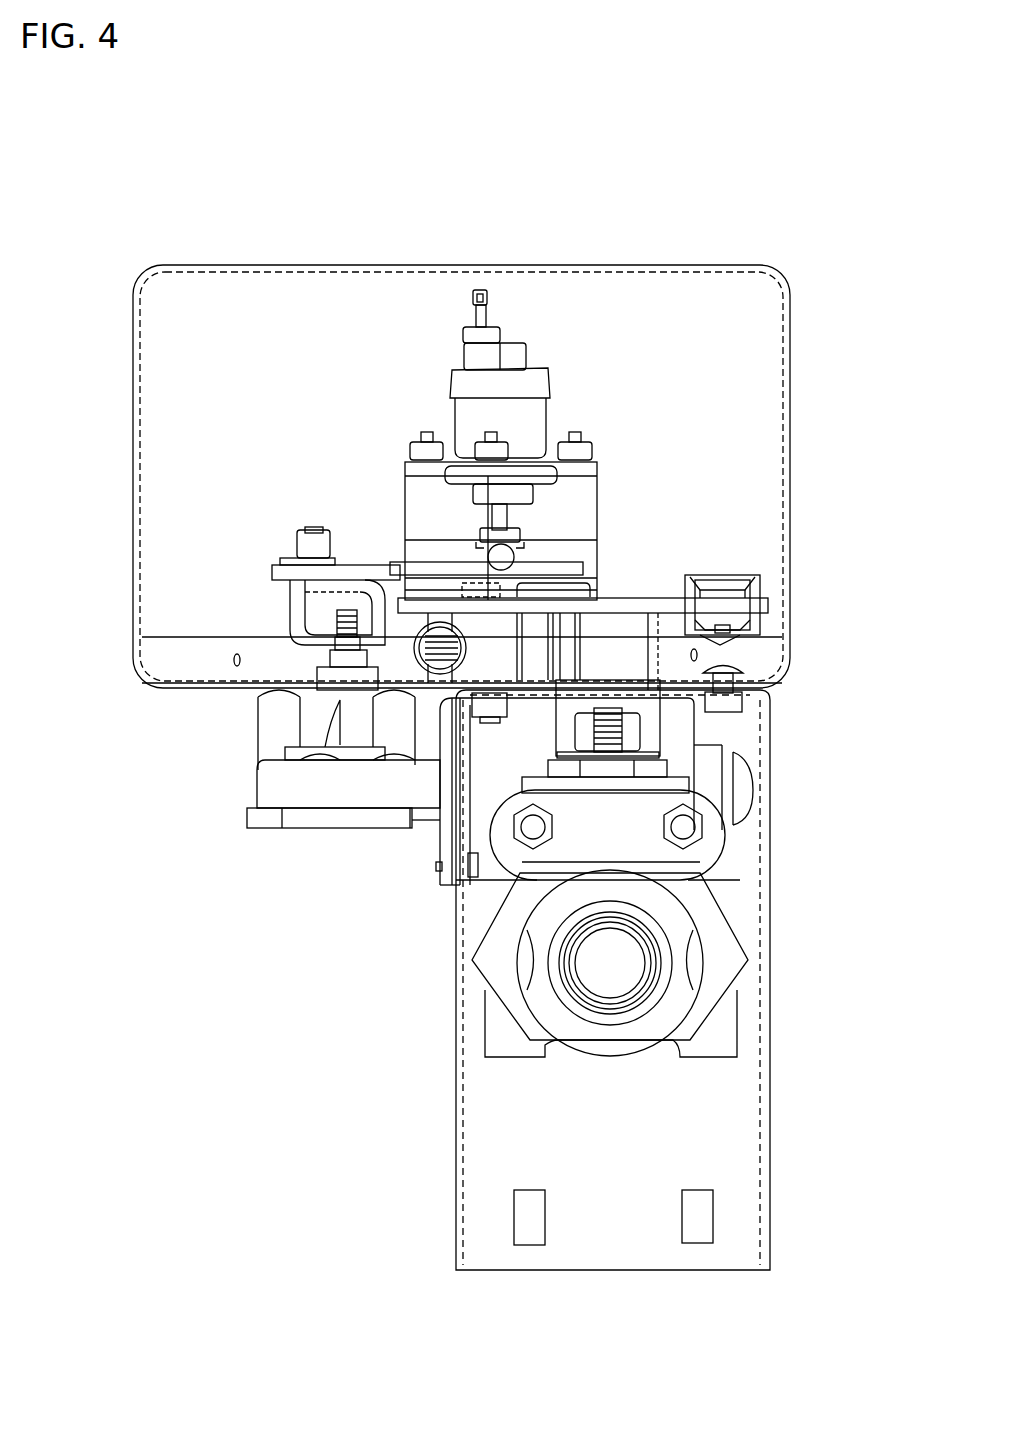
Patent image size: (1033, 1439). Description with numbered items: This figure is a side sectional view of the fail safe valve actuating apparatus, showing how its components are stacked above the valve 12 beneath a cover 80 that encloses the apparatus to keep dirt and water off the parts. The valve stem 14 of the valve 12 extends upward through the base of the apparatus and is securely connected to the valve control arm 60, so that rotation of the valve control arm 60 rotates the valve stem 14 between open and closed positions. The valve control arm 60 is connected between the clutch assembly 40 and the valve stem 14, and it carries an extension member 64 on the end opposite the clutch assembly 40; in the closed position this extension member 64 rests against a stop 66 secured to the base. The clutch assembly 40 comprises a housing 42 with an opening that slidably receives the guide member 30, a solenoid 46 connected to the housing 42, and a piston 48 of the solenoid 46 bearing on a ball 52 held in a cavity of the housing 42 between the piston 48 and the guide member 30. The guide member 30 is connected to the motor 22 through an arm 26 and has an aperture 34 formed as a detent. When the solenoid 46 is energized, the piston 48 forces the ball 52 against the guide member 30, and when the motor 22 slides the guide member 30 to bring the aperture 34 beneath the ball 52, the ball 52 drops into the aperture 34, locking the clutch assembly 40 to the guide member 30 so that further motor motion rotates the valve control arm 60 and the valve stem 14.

The cover 80 is at (765, 267).
The valve 12 is at (780, 930).
The motor 22 is at (682, 722).
The valve stem 14 is at (655, 736).
The clutch assembly 40 is at (614, 450).
The solenoid 46 is at (540, 383).
The housing 42 is at (413, 480).
The piston 48 is at (507, 518).
The ball 52 is at (512, 557).
The guide member 30 is at (570, 568).
The valve control arm 60 is at (658, 598).
The extension member 64 is at (770, 606).
The stop 66 is at (738, 575).
The aperture 34 is at (410, 553).
The arm 26 is at (305, 623).